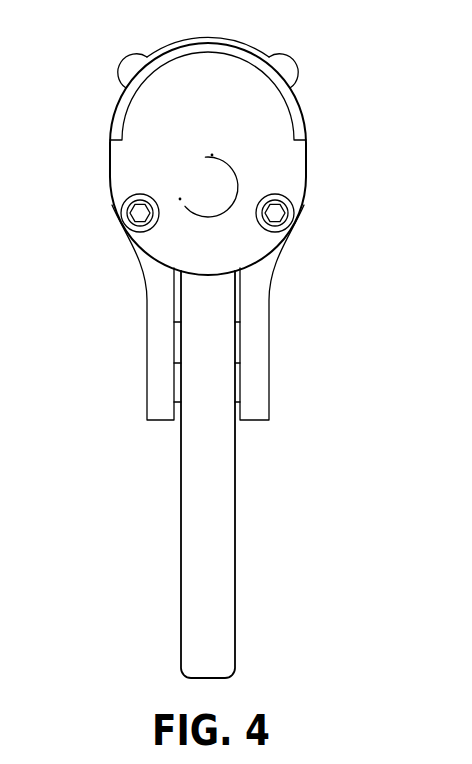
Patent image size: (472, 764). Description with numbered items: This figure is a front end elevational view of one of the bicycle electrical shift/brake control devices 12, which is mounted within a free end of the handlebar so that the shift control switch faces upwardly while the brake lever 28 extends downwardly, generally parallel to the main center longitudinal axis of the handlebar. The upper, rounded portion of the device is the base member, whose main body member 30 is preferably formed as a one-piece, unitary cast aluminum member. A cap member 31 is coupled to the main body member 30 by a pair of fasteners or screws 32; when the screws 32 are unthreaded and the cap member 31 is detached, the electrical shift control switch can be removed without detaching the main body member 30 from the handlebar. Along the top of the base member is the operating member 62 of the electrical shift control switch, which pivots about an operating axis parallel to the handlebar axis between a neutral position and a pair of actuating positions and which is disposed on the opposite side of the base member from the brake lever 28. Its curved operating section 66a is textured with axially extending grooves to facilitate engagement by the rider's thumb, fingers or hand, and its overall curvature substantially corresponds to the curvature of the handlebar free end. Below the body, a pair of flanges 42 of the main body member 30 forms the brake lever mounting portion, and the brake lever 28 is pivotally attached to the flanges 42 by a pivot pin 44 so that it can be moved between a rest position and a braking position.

The electrical shift/brake control device 12 is at (338, 129).
The brake lever 28 is at (243, 527).
The main body member 30 is at (112, 128).
The cap member 31 is at (268, 158).
The fasteners or screws 32 is at (125, 222).
The flanges 42 is at (160, 347).
The pivot pin 44 is at (178, 386).
The operating member 62 is at (302, 93).
The curved operating section 66a is at (183, 53).